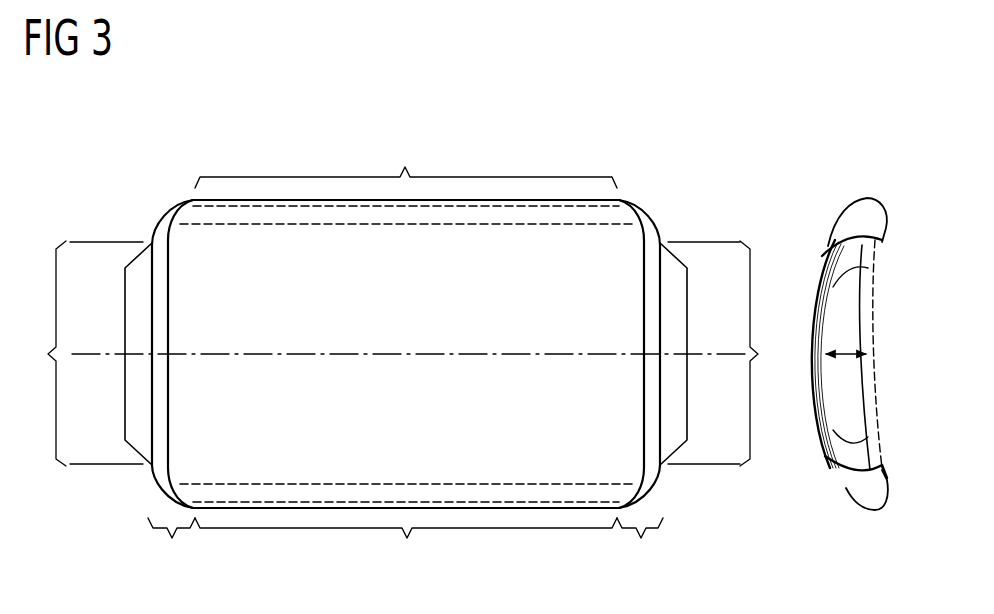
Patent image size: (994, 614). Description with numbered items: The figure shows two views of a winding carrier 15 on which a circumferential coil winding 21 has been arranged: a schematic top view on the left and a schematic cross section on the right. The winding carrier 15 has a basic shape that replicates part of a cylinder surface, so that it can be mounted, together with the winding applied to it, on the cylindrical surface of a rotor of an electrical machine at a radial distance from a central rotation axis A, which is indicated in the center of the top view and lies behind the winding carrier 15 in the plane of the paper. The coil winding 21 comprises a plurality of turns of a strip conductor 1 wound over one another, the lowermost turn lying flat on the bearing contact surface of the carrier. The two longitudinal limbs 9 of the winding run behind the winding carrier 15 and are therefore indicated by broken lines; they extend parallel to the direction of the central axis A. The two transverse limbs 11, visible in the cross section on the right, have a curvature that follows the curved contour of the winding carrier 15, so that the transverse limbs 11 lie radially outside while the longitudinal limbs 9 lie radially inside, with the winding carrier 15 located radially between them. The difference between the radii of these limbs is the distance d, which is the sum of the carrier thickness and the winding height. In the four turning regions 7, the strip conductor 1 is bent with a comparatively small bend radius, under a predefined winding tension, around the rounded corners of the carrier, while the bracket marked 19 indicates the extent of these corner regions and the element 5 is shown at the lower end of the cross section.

The strip conductor 1 is at (160, 407).
The end cap 5 is at (847, 474).
The turning regions 7 is at (151, 221).
The longitudinal limbs 9 is at (893, 462).
The transverse limbs 11 is at (806, 268).
The winding carrier 15 is at (191, 166).
The transition zone 19 is at (405, 549).
The coil winding 21 is at (479, 142).
The distance d is at (842, 358).
The central rotation axis A is at (87, 352).